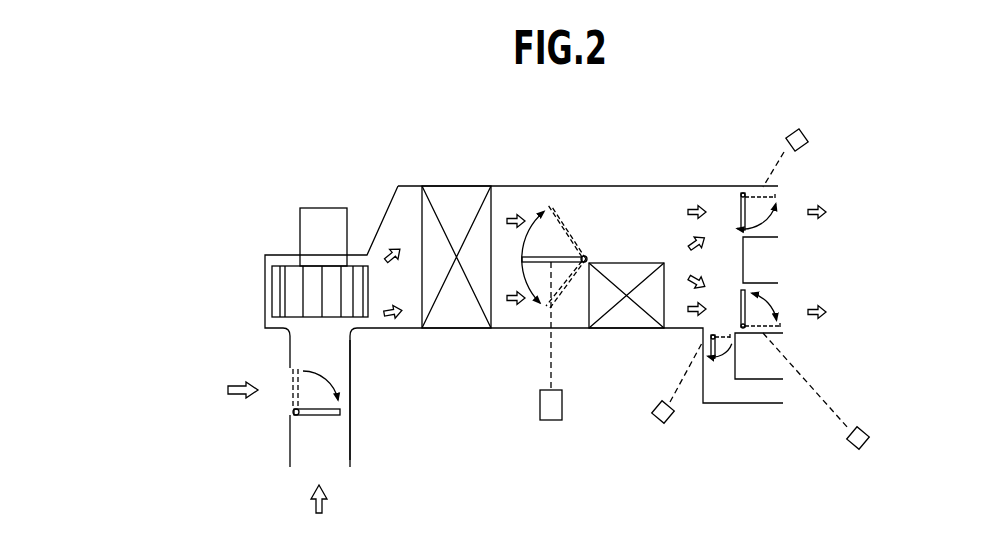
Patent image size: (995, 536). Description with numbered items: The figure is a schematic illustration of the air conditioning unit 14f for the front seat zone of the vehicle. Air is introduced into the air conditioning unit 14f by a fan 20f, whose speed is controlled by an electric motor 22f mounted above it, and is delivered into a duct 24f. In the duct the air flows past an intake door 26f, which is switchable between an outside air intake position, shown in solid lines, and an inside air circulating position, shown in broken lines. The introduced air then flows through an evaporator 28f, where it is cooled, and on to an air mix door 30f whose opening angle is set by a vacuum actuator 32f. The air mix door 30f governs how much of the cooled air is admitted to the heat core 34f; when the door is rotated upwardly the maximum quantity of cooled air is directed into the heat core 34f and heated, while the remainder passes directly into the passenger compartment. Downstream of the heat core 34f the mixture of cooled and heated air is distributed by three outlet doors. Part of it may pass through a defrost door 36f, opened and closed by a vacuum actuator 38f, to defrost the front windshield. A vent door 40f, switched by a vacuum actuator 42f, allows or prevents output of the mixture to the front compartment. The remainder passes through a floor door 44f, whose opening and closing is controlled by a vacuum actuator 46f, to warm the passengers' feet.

The air conditioning unit 14f is at (518, 183).
The fan 20f is at (278, 295).
The electric motor 22f is at (333, 212).
The duct 24f is at (350, 383).
The intake door 26f is at (315, 415).
The evaporator 28f is at (465, 322).
The air mix door 30f is at (563, 257).
The vacuum actuator 32f is at (551, 420).
The heat core 34f is at (612, 325).
The defrost door 36f is at (702, 343).
The vacuum actuator 38f is at (655, 423).
The vent door 40f is at (737, 195).
The vacuum actuator 42f is at (807, 127).
The floor door 44f is at (745, 290).
The vacuum actuator 46f is at (850, 442).